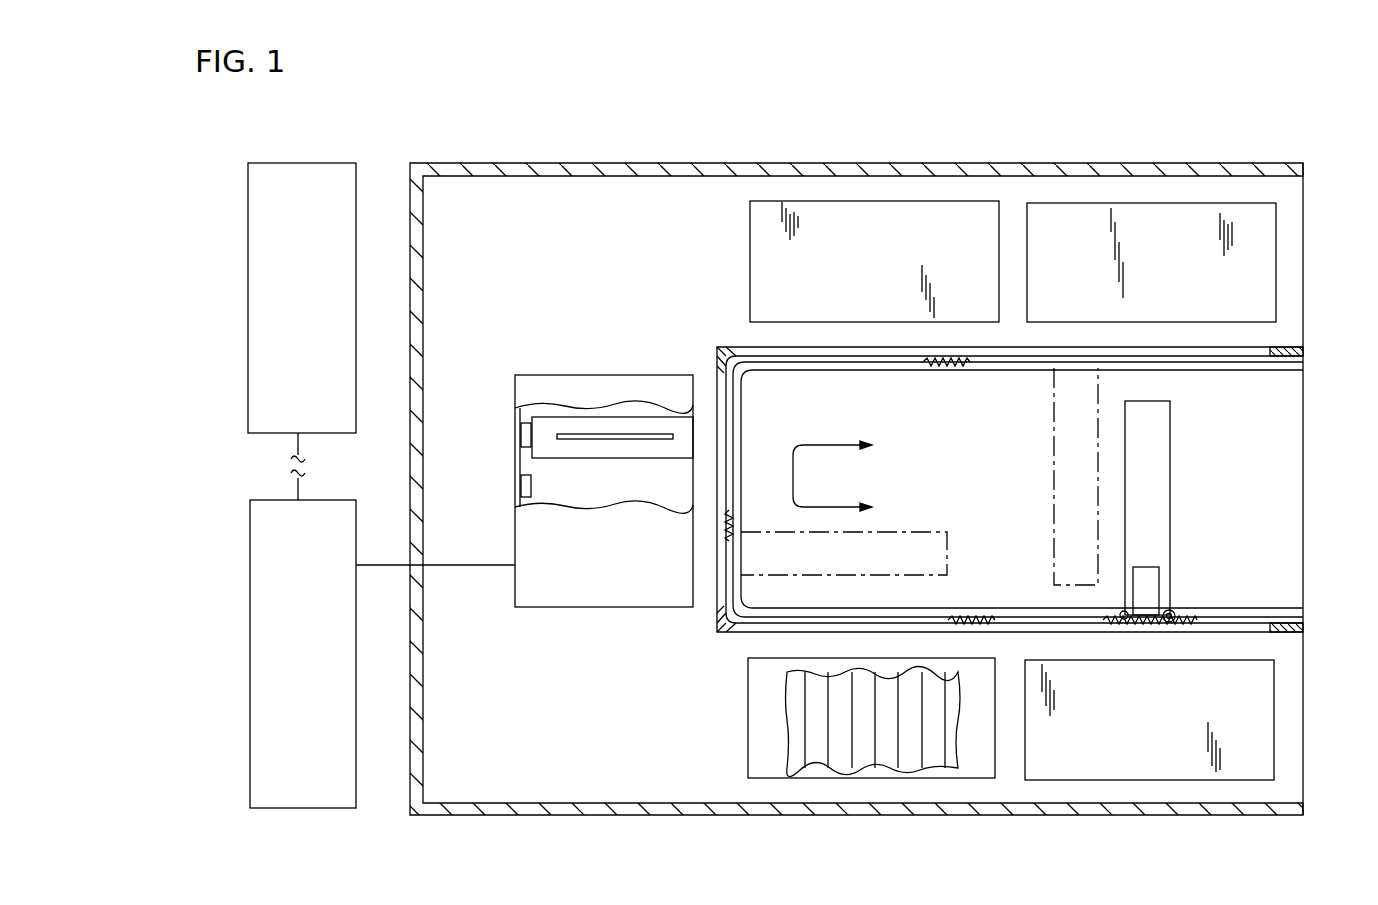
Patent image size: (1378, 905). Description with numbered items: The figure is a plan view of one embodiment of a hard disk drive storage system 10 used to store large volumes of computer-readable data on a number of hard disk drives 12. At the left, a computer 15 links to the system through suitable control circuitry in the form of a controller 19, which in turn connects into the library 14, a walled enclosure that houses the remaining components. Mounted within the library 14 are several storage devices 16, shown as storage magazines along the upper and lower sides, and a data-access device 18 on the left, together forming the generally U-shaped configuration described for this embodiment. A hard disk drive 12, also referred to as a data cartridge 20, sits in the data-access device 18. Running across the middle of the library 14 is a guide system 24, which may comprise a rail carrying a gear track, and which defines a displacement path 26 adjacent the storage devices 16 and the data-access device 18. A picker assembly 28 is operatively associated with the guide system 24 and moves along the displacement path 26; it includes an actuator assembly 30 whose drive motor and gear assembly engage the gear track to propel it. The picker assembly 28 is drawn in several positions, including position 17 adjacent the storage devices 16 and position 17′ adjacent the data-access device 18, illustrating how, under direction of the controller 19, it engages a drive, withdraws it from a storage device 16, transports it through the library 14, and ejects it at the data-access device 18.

The hard disk drive storage system 10 is at (1160, 143).
The hard disk drives 12 is at (588, 460).
The library 14 is at (515, 161).
The computer 15 is at (246, 395).
The storage devices 16 is at (1045, 203).
The position 17 is at (1172, 467).
The position 17′ is at (912, 532).
The data-access device 18 is at (667, 610).
The controller 19 is at (248, 712).
The data cartridge 20 is at (537, 470).
The guide system 24 is at (1279, 606).
The displacement path 26 is at (793, 477).
The picker assembly 28 is at (1180, 504).
The actuator assembly 30 is at (1173, 613).